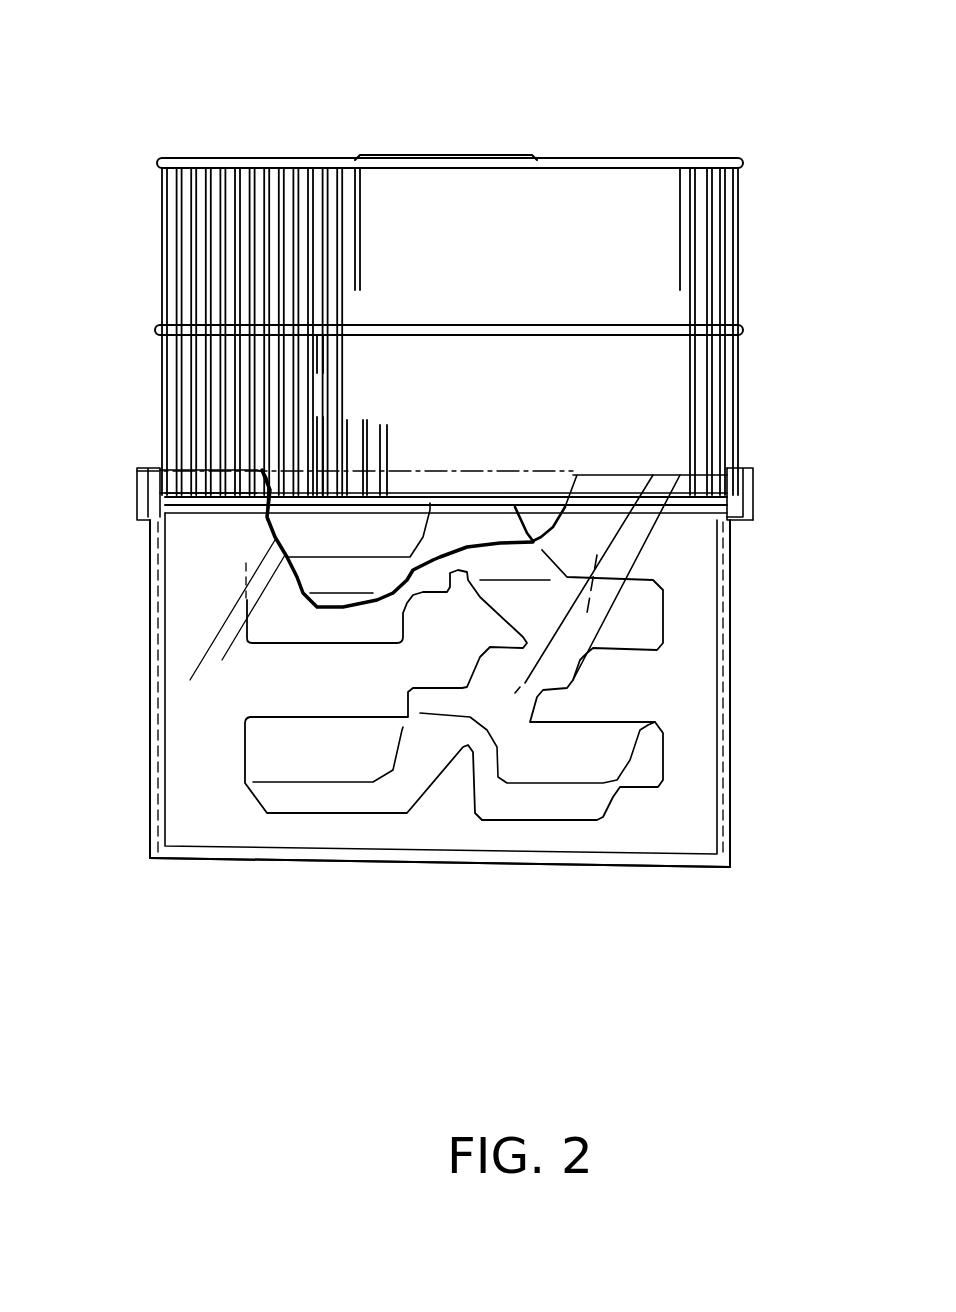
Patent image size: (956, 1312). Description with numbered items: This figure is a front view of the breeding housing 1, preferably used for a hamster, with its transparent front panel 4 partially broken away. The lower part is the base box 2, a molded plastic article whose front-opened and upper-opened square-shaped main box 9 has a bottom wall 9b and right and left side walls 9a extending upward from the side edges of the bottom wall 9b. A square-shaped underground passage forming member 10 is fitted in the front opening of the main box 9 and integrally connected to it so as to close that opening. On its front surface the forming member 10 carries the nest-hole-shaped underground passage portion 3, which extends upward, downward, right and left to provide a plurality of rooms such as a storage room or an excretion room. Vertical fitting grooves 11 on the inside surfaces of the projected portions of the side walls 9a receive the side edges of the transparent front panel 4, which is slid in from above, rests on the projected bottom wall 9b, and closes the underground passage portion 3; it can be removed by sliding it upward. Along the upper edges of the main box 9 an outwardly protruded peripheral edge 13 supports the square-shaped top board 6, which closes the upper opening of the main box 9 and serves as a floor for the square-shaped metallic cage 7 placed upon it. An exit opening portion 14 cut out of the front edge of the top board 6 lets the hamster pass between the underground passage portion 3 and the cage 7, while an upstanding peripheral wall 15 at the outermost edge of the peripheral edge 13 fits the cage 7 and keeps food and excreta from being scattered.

The breeding housing 1 is at (646, 125).
The base box 2 is at (735, 618).
The underground passage portion 3 is at (408, 92).
The transparent front panel 4 is at (210, 577).
The top board 6 is at (408, 503).
The cage 7 is at (158, 238).
The main box 9 is at (150, 693).
The side walls 9a is at (153, 760).
The bottom wall 9b is at (530, 868).
The underground passage forming member 10 is at (334, 540).
The fitting grooves 11 is at (170, 624).
The outwardly protruded peripheral edge 13 is at (740, 527).
The exit opening portion 14 is at (503, 507).
The upstanding peripheral wall 15 is at (753, 498).